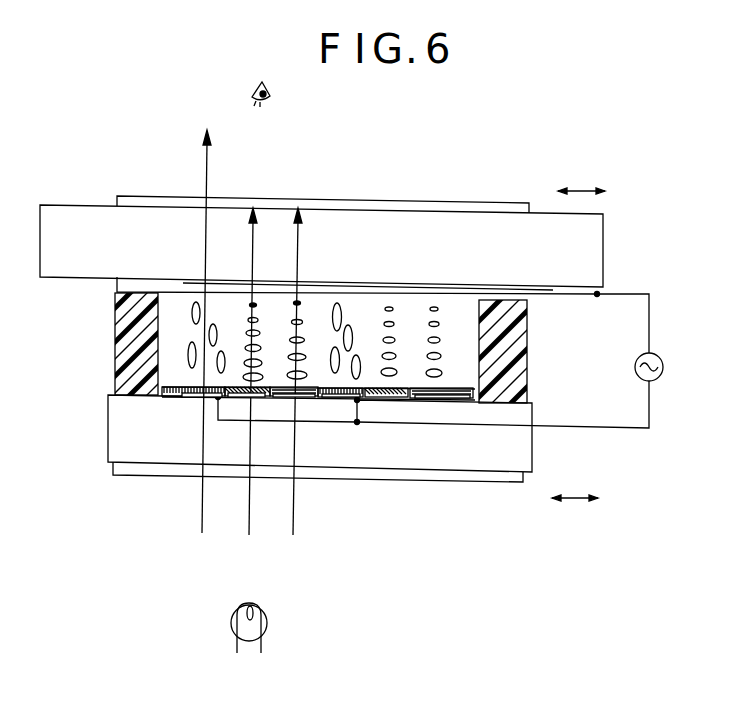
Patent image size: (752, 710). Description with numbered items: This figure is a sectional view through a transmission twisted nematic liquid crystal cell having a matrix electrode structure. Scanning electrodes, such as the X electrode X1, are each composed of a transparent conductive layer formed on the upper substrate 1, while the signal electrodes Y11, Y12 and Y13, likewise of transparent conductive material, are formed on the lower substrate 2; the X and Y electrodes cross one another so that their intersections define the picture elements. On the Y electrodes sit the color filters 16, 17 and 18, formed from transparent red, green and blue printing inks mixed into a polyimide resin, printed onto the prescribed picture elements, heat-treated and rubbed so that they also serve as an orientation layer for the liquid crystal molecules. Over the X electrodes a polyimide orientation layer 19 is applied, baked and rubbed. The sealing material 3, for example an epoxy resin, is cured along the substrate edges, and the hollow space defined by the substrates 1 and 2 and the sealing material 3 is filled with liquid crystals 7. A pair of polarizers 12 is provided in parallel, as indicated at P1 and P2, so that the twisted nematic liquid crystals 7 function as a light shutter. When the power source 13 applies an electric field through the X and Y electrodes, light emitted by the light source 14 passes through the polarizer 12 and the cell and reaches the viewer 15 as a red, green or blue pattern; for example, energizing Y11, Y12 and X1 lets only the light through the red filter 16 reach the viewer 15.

The substrate 1 is at (600, 231).
The substrate 2 is at (523, 447).
The sealing material 3 is at (523, 357).
The liquid crystals 7 is at (190, 322).
The polarizer 12 is at (137, 200).
The power source 13 is at (661, 374).
The light source 14 is at (231, 627).
The viewer 15 is at (252, 90).
The red filter 16 is at (335, 400).
The color filter 17 is at (389, 400).
The color filter 18 is at (443, 401).
The orientation layer 19 is at (117, 286).
The scanning electrode X1 is at (550, 298).
The signal electrode Y11 is at (190, 400).
The signal electrode Y12 is at (240, 399).
The signal electrode Y13 is at (290, 399).
The polarizer direction P1 is at (581, 174).
The polarizer direction P2 is at (575, 515).